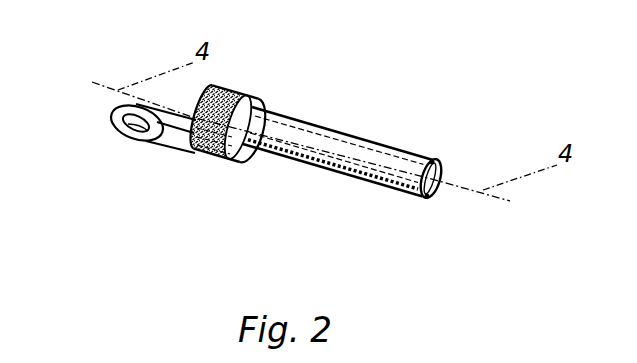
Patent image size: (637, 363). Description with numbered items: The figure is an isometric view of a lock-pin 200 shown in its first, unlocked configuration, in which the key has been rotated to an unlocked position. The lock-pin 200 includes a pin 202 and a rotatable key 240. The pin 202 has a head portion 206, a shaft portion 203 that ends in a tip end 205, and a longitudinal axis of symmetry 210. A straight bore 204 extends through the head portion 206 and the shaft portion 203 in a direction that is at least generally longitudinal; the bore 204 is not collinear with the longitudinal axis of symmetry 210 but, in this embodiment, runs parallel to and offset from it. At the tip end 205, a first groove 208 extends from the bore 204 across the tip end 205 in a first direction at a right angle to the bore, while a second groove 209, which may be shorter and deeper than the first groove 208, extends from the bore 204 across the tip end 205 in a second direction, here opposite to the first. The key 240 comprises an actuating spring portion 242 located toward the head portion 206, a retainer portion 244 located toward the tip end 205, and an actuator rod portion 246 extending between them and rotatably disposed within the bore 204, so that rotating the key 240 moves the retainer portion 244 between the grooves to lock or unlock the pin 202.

The lock-pin 200 is at (357, 158).
The pin 202 is at (349, 121).
The shaft portion 203 is at (368, 132).
The bore 204 is at (376, 176).
The tip end 205 is at (433, 158).
The head portion 206 is at (243, 90).
The first groove 208 is at (441, 170).
The second groove 209 is at (427, 205).
The longitudinal axis of symmetry 210 is at (511, 201).
The rotatable key 240 is at (139, 181).
The spring portion 242 is at (115, 116).
The retainer portion 244 is at (429, 201).
The actuator rod portion 246 is at (289, 160).